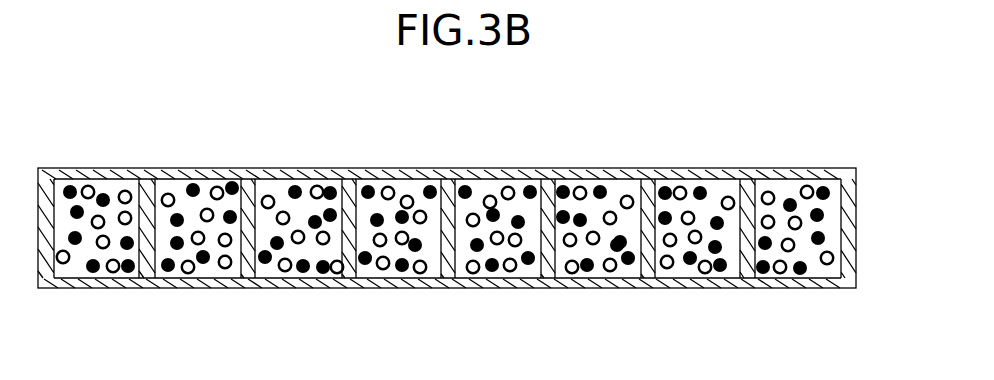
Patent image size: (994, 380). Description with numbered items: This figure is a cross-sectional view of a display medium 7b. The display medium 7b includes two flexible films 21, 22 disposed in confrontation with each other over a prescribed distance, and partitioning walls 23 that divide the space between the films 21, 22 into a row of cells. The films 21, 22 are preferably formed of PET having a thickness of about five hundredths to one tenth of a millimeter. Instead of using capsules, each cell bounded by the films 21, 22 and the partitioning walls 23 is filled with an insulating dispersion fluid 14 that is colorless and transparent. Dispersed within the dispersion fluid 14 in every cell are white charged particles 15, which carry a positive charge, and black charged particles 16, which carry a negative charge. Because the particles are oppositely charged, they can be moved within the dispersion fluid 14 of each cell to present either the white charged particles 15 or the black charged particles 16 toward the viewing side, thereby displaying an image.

The display medium 7b is at (798, 108).
The dispersion fluid 14 is at (834, 230).
The white charged particles 15 is at (834, 259).
The black charged particles 16 is at (845, 193).
The film 21 is at (706, 170).
The film 22 is at (724, 288).
The partitioning walls 23 is at (647, 170).